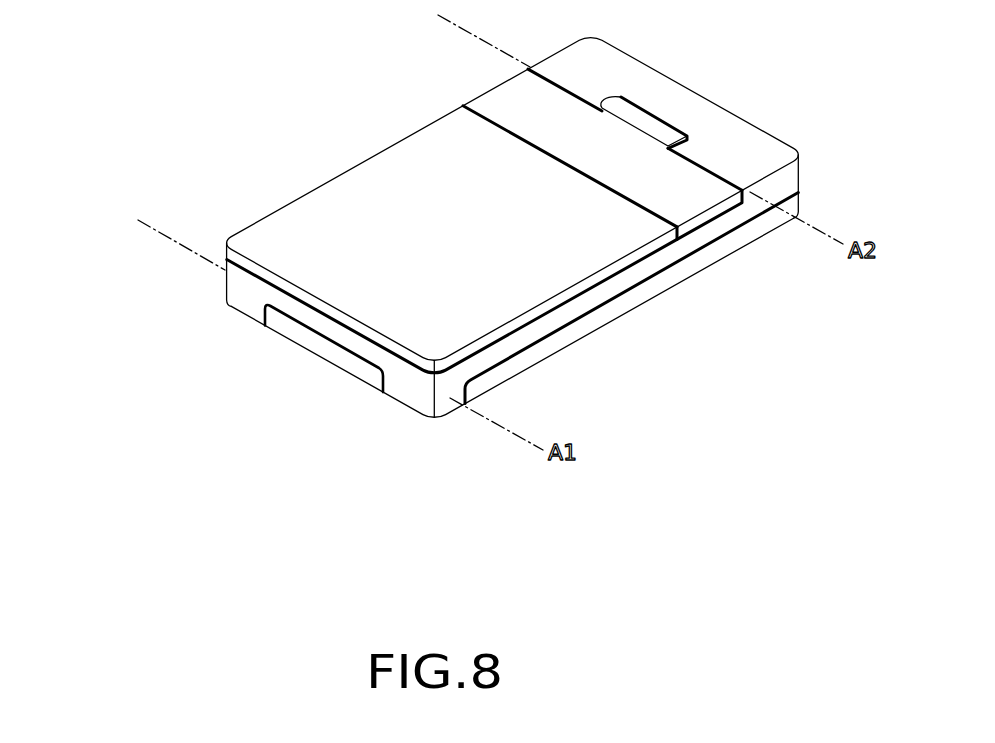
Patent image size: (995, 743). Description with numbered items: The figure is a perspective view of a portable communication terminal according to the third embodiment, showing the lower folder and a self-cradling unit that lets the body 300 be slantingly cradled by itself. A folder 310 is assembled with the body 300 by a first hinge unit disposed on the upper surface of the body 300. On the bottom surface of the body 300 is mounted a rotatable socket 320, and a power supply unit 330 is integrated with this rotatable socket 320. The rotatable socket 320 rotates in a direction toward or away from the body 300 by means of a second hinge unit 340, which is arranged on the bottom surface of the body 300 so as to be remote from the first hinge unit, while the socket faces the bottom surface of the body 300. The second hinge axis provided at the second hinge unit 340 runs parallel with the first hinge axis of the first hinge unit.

The body 300 is at (200, 307).
The folder 310 is at (580, 323).
The rotatable socket 320 is at (512, 97).
The power supply unit 330 is at (377, 173).
The second hinge unit 340 is at (648, 122).